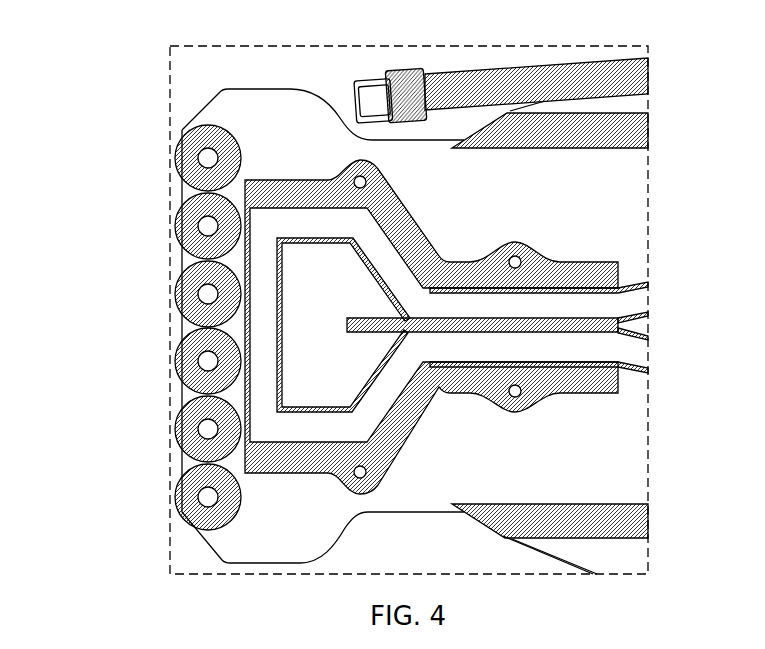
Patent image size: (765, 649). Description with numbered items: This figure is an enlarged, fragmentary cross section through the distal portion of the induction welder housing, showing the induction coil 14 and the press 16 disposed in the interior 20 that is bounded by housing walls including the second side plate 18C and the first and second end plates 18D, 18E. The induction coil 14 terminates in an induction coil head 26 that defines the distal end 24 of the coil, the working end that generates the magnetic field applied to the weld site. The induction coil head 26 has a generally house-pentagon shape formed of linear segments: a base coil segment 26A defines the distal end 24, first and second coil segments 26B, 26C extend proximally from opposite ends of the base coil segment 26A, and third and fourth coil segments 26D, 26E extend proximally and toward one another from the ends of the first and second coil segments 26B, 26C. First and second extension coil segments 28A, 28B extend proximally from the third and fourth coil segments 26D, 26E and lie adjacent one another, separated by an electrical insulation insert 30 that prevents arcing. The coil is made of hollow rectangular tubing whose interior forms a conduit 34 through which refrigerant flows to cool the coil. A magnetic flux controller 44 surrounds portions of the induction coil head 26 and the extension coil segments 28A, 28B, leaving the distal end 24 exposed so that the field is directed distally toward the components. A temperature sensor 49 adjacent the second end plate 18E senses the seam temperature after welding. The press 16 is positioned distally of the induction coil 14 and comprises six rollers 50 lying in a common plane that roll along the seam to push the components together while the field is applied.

The induction coil 14 is at (401, 358).
The press 16 is at (108, 237).
The second side plate 18C is at (318, 112).
The first end plate 18D is at (630, 518).
The second end plate 18E is at (622, 130).
The interior 20 is at (634, 180).
The distal end of the induction coil 24 is at (240, 398).
The induction coil head 26 is at (364, 358).
The base coil segment 26A is at (258, 328).
The first coil segment 26B is at (315, 427).
The second coil segment 26C is at (310, 220).
The third coil segment 26D is at (385, 385).
The fourth coil segment 26E is at (390, 265).
The first extension coil segment 28A is at (542, 347).
The second extension coil segment 28B is at (508, 300).
The electrical insulation insert 30 is at (593, 327).
The conduit 34 is at (447, 305).
The magnetic flux controller 44 is at (500, 265).
The temperature sensor 49 is at (408, 93).
The rollers 50 is at (178, 220).